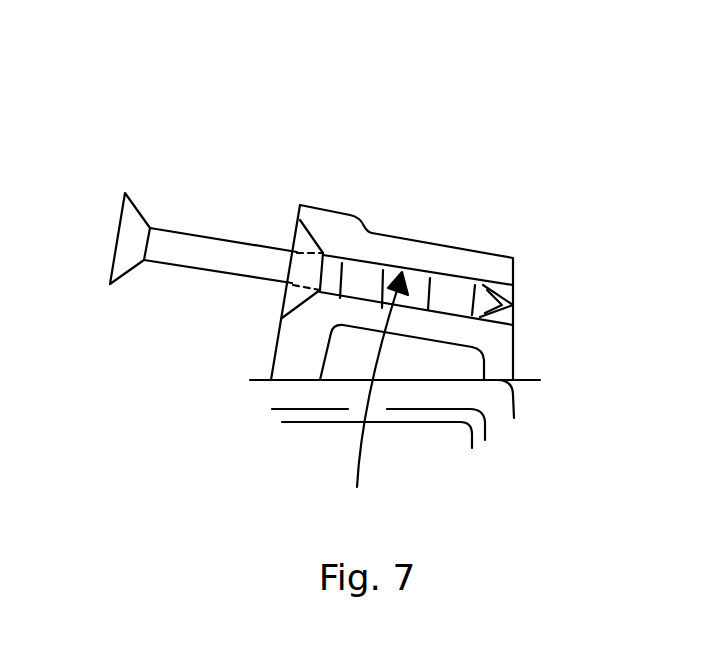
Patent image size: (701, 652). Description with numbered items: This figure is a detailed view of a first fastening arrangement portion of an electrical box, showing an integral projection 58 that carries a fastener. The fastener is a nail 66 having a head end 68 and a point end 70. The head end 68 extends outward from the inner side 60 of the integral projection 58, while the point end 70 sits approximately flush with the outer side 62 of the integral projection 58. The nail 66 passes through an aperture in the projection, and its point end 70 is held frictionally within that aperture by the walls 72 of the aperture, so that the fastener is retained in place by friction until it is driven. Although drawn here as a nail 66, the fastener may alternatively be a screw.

The integral projection 58 is at (391, 174).
The inner side 60 is at (277, 333).
The outer side 62 is at (515, 274).
The nail 66 is at (202, 252).
The head end 68 is at (117, 240).
The point end 70 is at (513, 308).
The walls of the aperture 72 is at (378, 389).